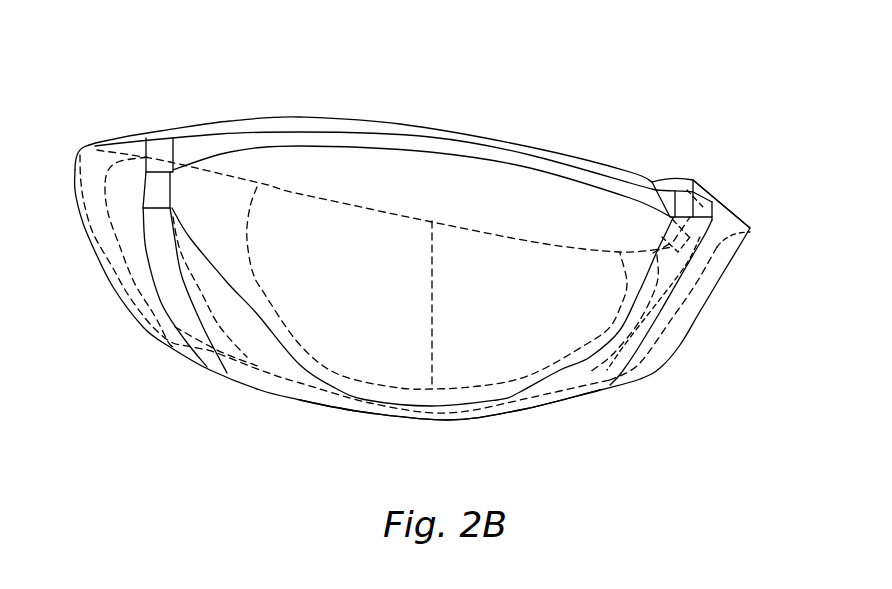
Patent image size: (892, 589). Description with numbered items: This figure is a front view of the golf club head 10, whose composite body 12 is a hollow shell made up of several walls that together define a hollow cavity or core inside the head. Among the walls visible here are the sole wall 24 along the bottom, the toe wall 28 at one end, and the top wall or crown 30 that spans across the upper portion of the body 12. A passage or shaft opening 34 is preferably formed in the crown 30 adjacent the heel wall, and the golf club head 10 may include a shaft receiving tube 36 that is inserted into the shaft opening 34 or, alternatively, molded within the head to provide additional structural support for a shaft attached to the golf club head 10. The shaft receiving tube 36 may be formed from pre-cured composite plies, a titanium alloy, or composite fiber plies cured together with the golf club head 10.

The golf club head 10 is at (171, 81).
The composite body 12 is at (376, 120).
The sole wall 24 is at (445, 421).
The toe wall 28 is at (92, 237).
The crown 30 is at (472, 134).
The shaft opening 34 is at (722, 204).
The shaft receiving tube 36 is at (672, 303).